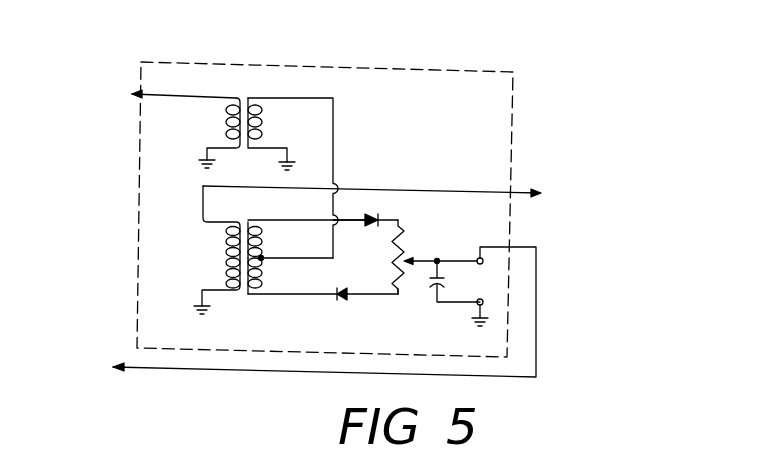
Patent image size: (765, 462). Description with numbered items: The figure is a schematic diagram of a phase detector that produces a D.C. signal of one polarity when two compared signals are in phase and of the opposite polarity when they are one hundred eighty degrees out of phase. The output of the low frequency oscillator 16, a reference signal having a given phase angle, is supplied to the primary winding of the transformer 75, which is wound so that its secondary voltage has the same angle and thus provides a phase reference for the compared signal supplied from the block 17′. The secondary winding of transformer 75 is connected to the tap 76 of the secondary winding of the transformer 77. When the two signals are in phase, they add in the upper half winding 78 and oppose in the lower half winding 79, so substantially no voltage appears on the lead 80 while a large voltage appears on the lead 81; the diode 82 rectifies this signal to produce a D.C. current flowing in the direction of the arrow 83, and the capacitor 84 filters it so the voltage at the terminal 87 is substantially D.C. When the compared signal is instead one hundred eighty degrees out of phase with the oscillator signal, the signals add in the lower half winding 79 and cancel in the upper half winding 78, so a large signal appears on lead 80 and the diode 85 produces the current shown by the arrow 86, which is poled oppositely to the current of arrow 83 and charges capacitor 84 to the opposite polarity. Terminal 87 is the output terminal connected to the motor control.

The low frequency oscillator 16 is at (137, 97).
The block 17′ is at (404, 209).
The transformer 75 is at (246, 104).
The tap 76 is at (264, 258).
The transformer 77 is at (243, 225).
The upper half winding 78 is at (258, 229).
The lower half winding 79 is at (258, 291).
The lead 80 is at (295, 294).
The lead 81 is at (350, 220).
The diode 82 is at (381, 220).
The arrow 83 is at (408, 222).
The capacitor 84 is at (442, 283).
The diode 85 is at (346, 294).
The arrow 86 is at (405, 288).
The terminal 87 is at (478, 257).